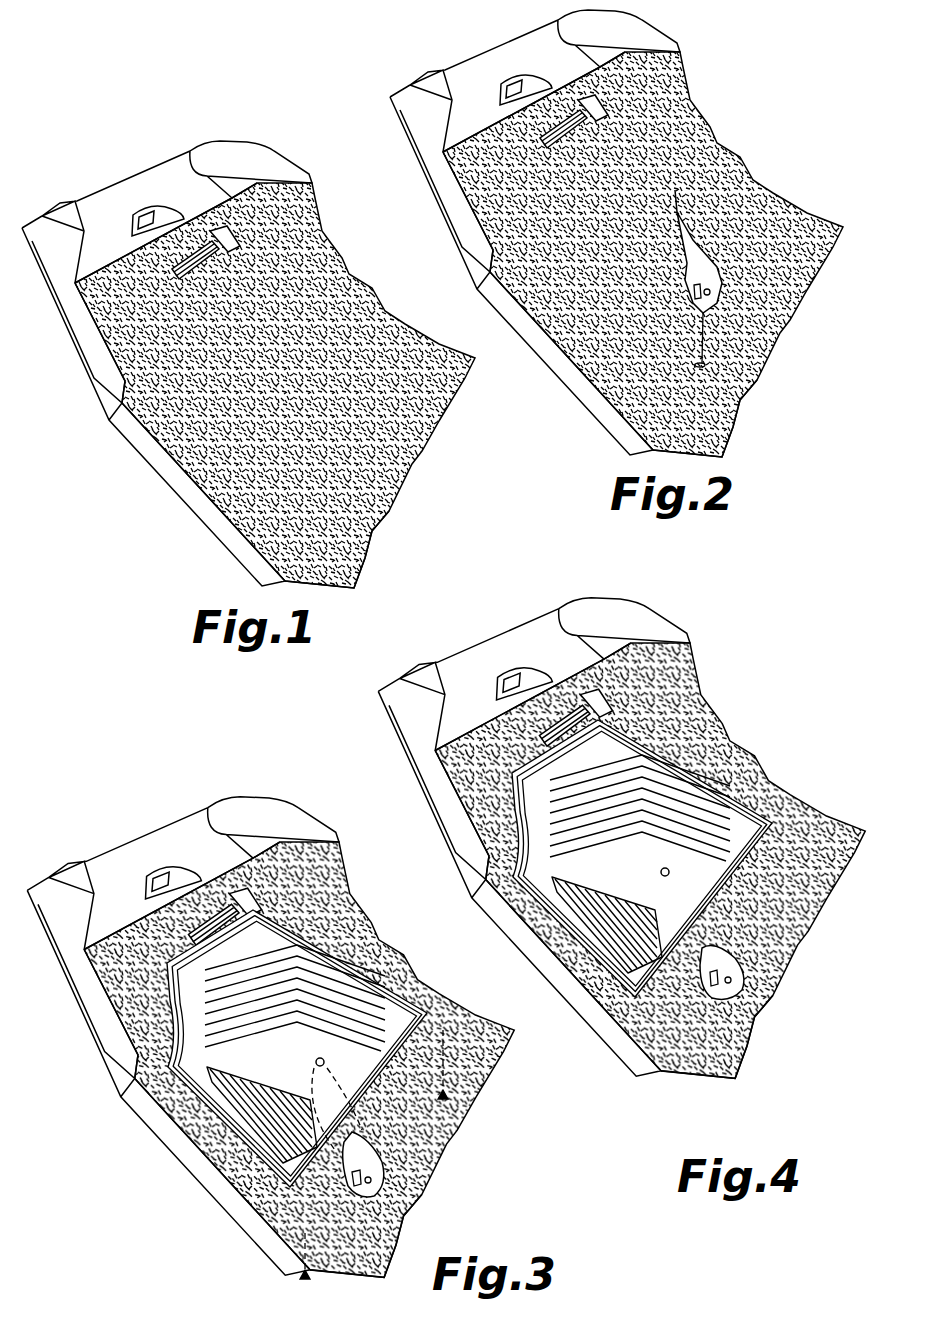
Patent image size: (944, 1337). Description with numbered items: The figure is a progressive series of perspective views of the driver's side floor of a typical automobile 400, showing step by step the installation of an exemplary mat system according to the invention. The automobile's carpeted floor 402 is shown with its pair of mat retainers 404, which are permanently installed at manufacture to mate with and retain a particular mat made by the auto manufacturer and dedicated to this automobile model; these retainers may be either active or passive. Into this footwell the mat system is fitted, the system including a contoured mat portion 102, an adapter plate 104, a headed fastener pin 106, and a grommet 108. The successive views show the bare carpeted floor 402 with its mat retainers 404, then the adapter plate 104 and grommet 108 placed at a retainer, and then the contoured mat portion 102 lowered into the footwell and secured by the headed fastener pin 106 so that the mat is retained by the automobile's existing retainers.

In FIG. 1, the automobile 400 is at (330, 206).
In FIG. 2, the automobile 400 is at (683, 36).
In FIG. 3, the automobile 400 is at (270, 1037).
In FIG. 4, the automobile 400 is at (664, 622).
In FIG. 1, the carpeted floor 402 is at (322, 258).
In FIG. 2, the carpeted floor 402 is at (783, 328).
In FIG. 1, the mat retainer 404 is at (330, 497).
In FIG. 2, the mat retainer 404 is at (722, 375).
In FIG. 3, the mat retainer 404 is at (392, 1198).
In FIG. 4, the mat retainer 404 is at (714, 1005).
In FIG. 3, the contoured mat portion 102 is at (183, 1120).
In FIG. 4, the contoured mat portion 102 is at (697, 772).
In FIG. 2, the adapter plate 104 is at (722, 262).
In FIG. 3, the adapter plate 104 is at (384, 1160).
In FIG. 4, the adapter plate 104 is at (742, 992).
In FIG. 3, the headed fastener pin 106 is at (321, 1035).
In FIG. 4, the headed fastener pin 106 is at (670, 868).
In FIG. 2, the grommet 108 is at (677, 183).